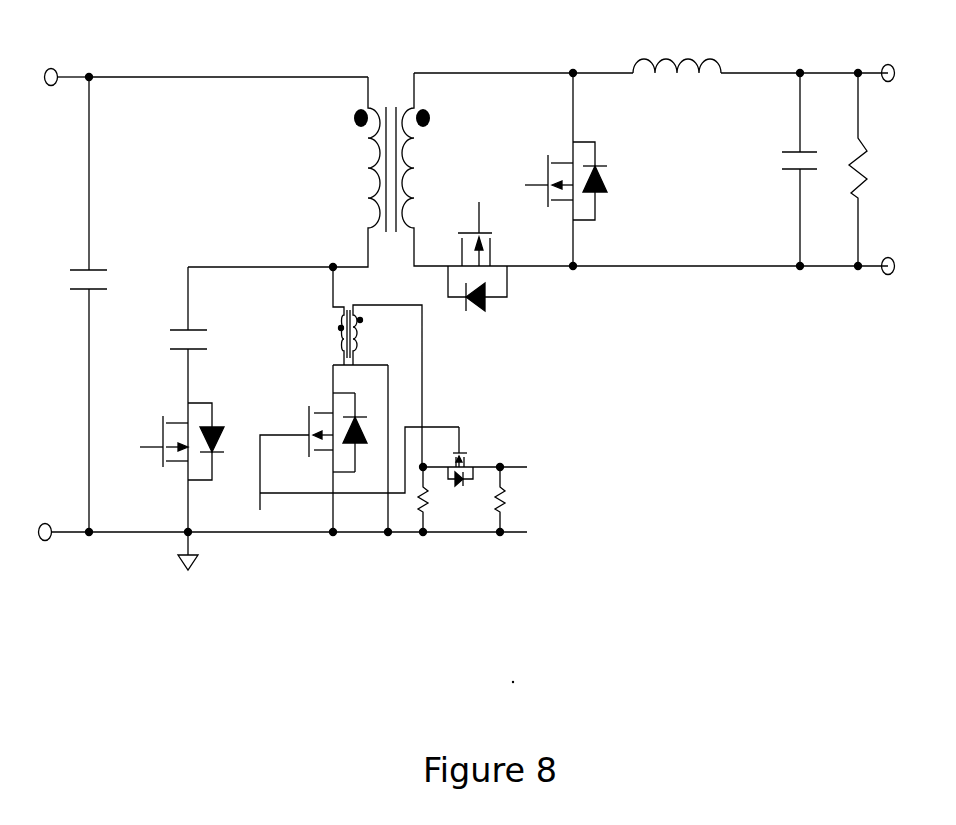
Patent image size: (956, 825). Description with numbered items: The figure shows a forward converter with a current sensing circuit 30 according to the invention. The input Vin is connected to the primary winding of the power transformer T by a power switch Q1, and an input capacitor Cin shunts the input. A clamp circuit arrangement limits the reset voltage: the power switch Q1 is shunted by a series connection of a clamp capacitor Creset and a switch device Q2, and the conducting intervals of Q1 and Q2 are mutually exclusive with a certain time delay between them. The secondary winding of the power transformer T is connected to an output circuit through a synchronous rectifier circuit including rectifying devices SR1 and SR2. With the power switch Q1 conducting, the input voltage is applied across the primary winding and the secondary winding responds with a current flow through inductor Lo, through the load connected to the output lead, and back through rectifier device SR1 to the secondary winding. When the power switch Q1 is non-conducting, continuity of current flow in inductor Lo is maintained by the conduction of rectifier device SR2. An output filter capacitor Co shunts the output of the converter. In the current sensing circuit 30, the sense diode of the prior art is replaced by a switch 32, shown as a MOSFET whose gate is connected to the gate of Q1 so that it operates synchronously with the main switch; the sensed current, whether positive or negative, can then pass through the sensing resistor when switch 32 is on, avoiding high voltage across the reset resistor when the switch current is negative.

The circuit 30 is at (467, 294).
The switch 32 is at (472, 453).
The input Vin is at (69, 52).
The input capacitor Cin is at (80, 304).
The clamp capacitor Creset is at (157, 335).
The switch device Q2 is at (175, 467).
The power switch Q1 is at (313, 448).
The power transformer T is at (390, 151).
The rectifying device SR1 is at (478, 269).
The rectifying device SR2 is at (593, 169).
The inductor Lo is at (677, 46).
The output filter capacitor Co is at (776, 169).